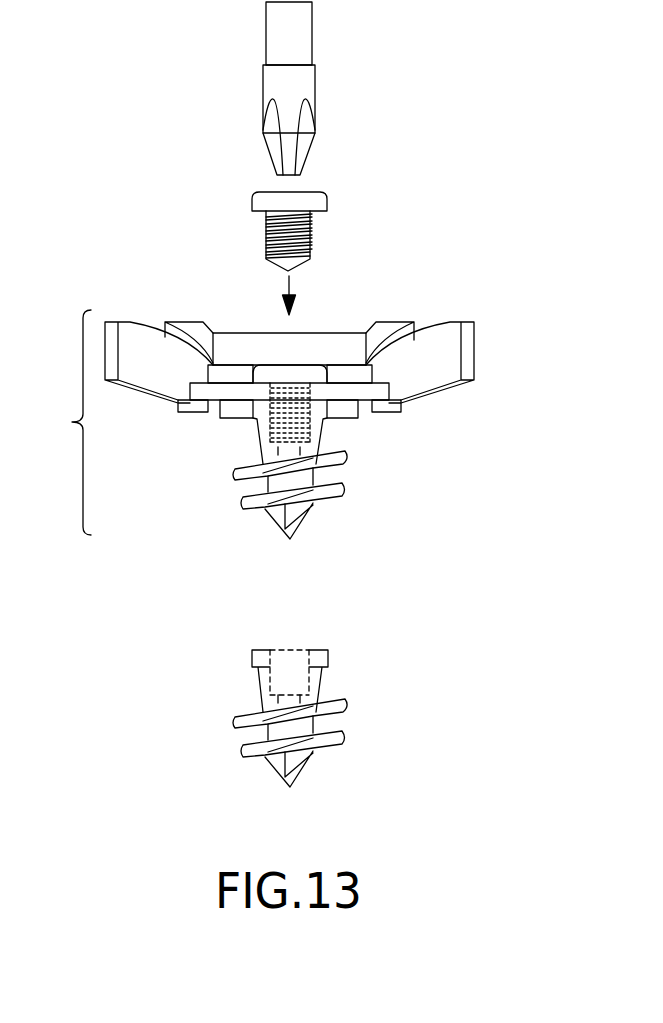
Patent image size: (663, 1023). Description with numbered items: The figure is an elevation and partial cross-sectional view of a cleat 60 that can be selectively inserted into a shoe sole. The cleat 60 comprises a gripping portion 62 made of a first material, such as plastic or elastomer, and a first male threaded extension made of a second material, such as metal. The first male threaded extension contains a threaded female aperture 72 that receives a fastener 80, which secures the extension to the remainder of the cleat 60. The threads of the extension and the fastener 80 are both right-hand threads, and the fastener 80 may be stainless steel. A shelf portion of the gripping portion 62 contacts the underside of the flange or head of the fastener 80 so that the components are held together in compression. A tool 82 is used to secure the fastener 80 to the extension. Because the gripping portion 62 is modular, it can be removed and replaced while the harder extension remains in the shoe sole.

The cleat 60 is at (258, 422).
The gripping portion 62 is at (465, 351).
The threaded female aperture 72 is at (264, 631).
The fastener 80 is at (317, 359).
The tool 82 is at (340, 103).